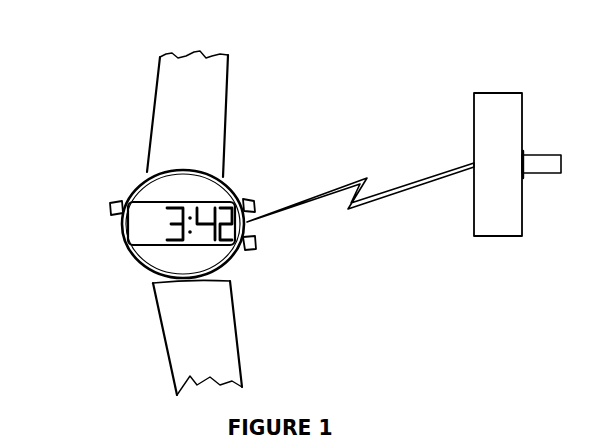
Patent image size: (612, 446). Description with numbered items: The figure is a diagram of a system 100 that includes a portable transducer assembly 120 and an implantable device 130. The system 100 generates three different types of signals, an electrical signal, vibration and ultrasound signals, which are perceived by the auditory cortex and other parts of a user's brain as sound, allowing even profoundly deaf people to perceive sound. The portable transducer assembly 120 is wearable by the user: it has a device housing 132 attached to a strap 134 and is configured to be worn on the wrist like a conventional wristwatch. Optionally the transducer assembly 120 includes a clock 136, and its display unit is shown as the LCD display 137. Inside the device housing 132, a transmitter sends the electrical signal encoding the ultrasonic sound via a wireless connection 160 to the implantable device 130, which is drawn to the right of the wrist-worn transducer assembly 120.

The system 100 is at (382, 57).
The portable transducer assembly 120 is at (109, 152).
The implantable device 130 is at (473, 92).
The device housing 132 is at (232, 270).
The strap 134 is at (225, 97).
The clock 136 is at (158, 230).
The LCD display 137 is at (124, 224).
The wireless connection 160 is at (362, 205).